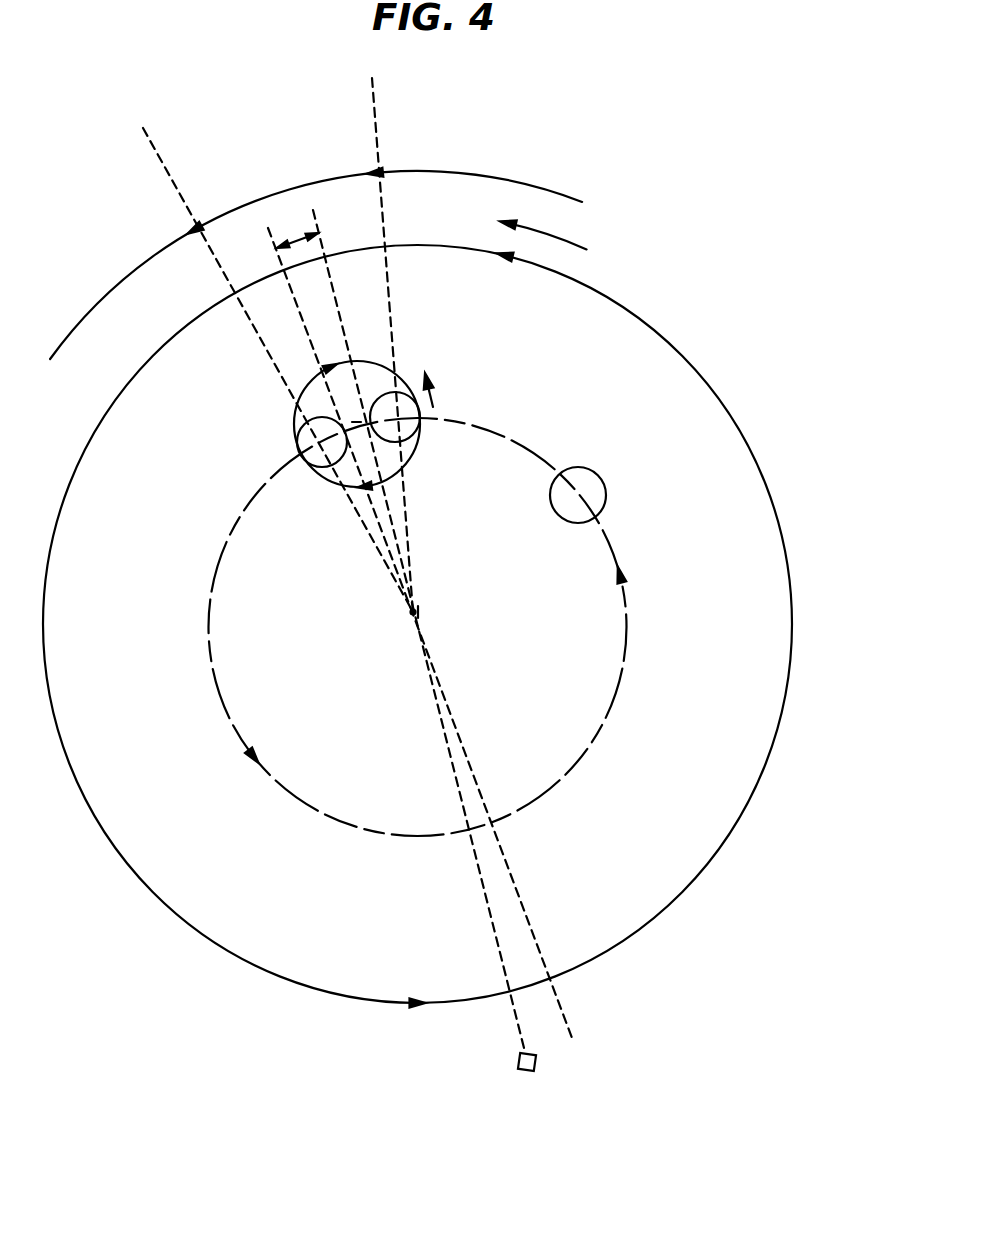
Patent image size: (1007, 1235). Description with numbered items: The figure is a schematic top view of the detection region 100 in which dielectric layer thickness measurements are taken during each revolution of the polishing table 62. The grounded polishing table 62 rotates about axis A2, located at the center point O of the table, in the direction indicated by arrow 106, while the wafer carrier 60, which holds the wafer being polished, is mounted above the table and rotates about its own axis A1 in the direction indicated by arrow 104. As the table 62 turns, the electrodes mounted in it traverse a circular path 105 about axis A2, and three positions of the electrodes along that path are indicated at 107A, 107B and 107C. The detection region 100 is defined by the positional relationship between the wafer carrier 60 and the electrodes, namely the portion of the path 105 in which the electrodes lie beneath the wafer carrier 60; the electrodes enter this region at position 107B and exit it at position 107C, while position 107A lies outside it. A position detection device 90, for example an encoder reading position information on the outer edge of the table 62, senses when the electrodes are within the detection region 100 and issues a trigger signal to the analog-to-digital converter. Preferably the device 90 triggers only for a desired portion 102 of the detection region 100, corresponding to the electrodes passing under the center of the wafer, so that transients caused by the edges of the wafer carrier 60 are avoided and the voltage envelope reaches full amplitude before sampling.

The polishing table 62 is at (635, 315).
The detection region 100 is at (262, 196).
The portion of detection region 102 is at (292, 238).
The arrow 104 is at (433, 393).
The circular path 105 is at (603, 527).
The arrow 106 is at (560, 237).
The electrode position 107A is at (598, 475).
The electrode position 107B is at (395, 432).
The electrode position 107C is at (305, 424).
The wafer carrier 60 is at (403, 380).
The position detection device 90 is at (518, 1068).
The axis A1 is at (355, 422).
The axis A2 is at (418, 612).
The center point O is at (402, 624).